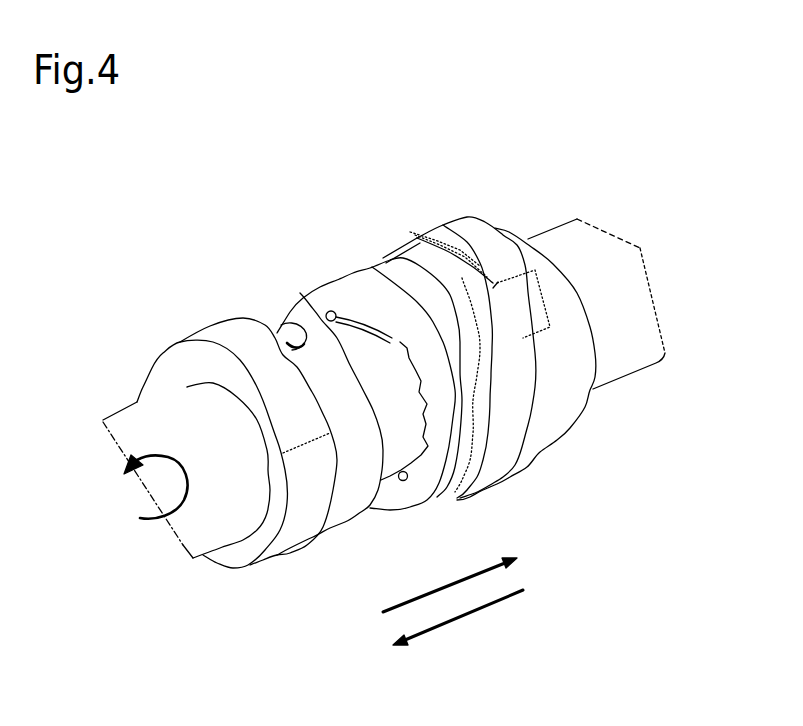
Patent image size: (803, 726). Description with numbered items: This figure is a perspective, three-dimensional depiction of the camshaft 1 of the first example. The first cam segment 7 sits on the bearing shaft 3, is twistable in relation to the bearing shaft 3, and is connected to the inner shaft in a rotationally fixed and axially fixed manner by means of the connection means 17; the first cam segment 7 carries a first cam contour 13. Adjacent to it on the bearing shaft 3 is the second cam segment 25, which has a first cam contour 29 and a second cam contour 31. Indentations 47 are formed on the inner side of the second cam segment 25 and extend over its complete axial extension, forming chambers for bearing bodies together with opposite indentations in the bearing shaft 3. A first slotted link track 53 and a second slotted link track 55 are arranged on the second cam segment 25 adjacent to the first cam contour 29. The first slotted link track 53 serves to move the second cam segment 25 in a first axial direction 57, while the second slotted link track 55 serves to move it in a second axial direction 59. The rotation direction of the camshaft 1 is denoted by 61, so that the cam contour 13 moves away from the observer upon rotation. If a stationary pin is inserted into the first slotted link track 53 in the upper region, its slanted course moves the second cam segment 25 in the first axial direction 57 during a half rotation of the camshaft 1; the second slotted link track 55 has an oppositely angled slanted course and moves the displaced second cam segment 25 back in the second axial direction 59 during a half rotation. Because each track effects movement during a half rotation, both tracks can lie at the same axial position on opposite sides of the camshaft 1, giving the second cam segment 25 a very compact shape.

The camshaft 1 is at (545, 147).
The bearing shaft 3 is at (630, 280).
The first cam segment 7 is at (292, 525).
The first cam contour 13 is at (233, 330).
The connection means 17 is at (277, 327).
The second cam segment 25 is at (552, 422).
The first cam contour 29 is at (463, 223).
The second cam contour 31 is at (513, 233).
The indentations 47 is at (325, 315).
The first slotted link track 53 is at (480, 447).
The second slotted link track 55 is at (385, 258).
The first axial direction 57 is at (447, 597).
The second axial direction 59 is at (457, 617).
The rotation direction 61 is at (175, 463).